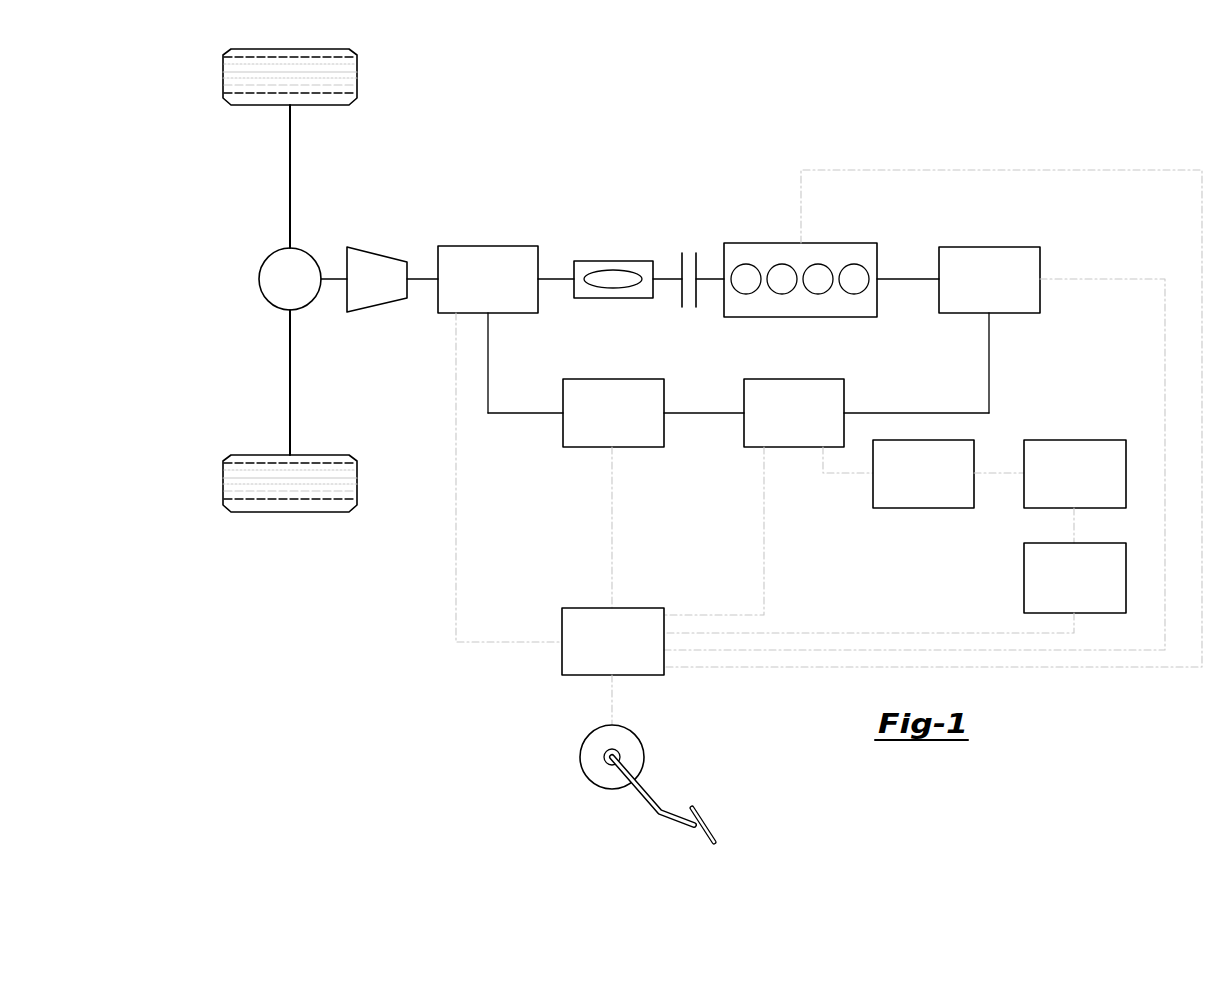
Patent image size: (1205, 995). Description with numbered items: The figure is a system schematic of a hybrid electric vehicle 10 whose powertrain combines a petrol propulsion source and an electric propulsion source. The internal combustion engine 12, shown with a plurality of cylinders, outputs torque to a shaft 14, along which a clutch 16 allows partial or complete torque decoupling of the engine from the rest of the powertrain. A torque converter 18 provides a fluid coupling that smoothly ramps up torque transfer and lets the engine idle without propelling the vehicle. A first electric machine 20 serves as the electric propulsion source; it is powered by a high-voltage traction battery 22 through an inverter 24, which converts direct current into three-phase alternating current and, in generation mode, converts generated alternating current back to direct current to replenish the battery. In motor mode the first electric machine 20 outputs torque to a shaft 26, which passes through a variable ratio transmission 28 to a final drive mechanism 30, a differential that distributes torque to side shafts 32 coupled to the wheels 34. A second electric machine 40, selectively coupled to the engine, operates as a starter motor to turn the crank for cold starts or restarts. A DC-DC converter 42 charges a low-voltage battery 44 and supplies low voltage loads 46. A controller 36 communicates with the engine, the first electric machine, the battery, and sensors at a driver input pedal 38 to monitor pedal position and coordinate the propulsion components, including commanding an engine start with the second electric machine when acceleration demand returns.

The vehicle 10 is at (156, 176).
The internal combustion engine 12 is at (760, 242).
The shaft 14 is at (704, 278).
The clutch 16 is at (681, 298).
The torque converter 18 is at (613, 260).
The first electric machine 20 is at (490, 245).
The high-voltage traction battery 22 is at (795, 378).
The inverter 24 is at (613, 378).
The shaft 26 is at (424, 277).
The variable ratio transmission 28 is at (376, 257).
The final drive mechanism 30 is at (259, 279).
The side shafts 32 is at (289, 177).
The wheels 34 is at (222, 78).
The controller 36 is at (585, 607).
The driver input pedal 38 is at (643, 801).
The second electric machine 40 is at (989, 246).
The DC-DC converter 42 is at (922, 509).
The low-voltage battery 44 is at (1074, 439).
The low voltage loads 46 is at (1024, 578).